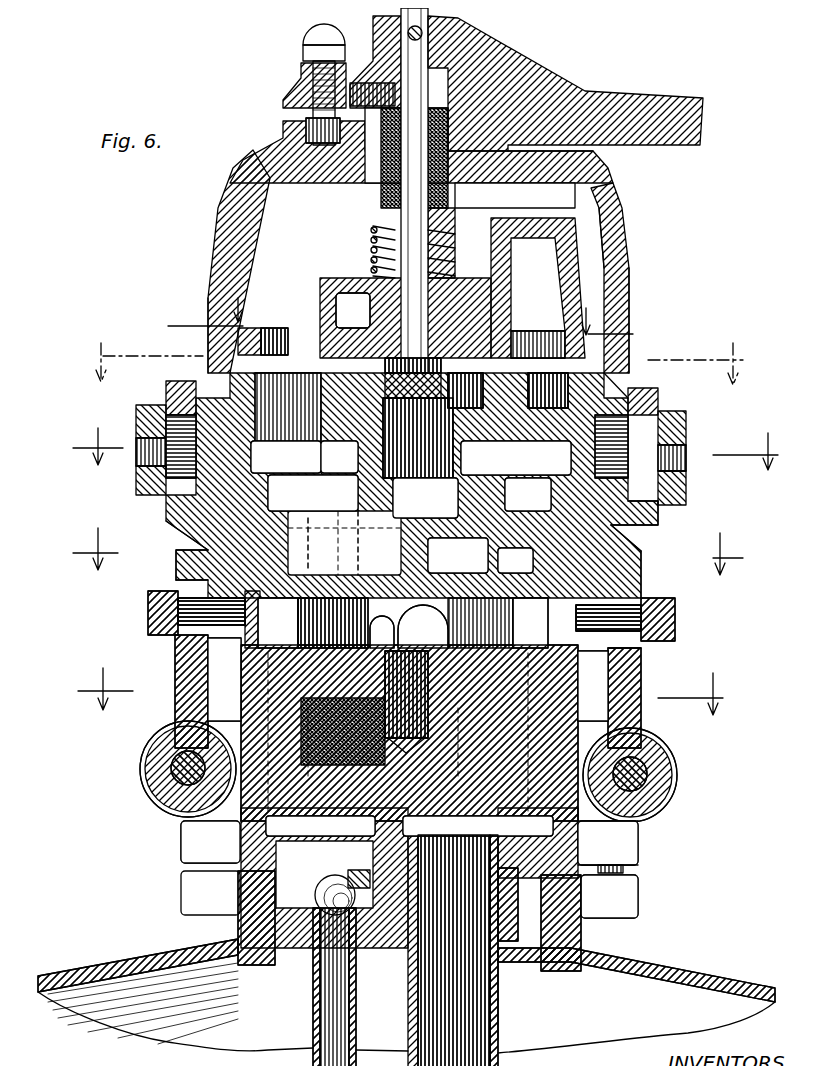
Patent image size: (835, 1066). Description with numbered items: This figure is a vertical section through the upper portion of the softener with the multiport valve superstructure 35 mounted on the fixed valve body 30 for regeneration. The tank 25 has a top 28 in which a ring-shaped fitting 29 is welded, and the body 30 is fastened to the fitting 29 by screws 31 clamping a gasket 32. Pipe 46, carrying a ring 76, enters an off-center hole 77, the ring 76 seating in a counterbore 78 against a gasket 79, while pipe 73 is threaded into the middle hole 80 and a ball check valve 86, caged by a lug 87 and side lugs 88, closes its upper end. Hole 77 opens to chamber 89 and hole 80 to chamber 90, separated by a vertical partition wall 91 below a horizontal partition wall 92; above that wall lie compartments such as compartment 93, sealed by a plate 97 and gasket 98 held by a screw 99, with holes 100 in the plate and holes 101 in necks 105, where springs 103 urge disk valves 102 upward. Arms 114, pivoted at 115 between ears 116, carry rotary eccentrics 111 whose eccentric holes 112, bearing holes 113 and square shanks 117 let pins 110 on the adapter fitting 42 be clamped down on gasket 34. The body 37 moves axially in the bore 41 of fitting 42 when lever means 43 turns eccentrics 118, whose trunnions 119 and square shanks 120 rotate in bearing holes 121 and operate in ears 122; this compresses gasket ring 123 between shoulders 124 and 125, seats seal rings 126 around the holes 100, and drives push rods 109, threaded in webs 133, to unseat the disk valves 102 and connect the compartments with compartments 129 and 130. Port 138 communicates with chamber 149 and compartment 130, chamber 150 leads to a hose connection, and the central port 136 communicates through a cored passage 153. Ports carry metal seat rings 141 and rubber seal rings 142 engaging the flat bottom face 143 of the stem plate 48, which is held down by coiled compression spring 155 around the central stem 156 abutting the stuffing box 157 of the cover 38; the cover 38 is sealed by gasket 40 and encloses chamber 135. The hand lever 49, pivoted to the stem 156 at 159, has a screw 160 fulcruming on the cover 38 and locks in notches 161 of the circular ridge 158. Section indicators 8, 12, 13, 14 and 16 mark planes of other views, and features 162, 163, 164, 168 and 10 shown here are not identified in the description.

The pivotal connection 159 is at (400, 25).
The screw 160 is at (293, 72).
The circular ridge 158 is at (290, 125).
The notches 161 is at (540, 143).
The hand lever 49 is at (690, 125).
The stuffing box 157 is at (450, 185).
The central stem 156 is at (365, 212).
The coiled compression spring 155 is at (445, 245).
The passage 168 is at (340, 290).
The chamber 135 is at (215, 242).
The stem plate 48 is at (575, 225).
The cover 38 is at (600, 245).
The control valve superstructure 35 is at (632, 285).
The section line 8 is at (412, 327).
The chamber 164 is at (548, 308).
The sleeve 163 is at (538, 344).
The bushing 162 is at (260, 328).
The section line 12 is at (427, 361).
The flat disk valves 102 is at (200, 368).
The ears 122 is at (160, 382).
The lever means 43 is at (130, 407).
The square operating shanks 120 is at (130, 445).
The section line 16 is at (432, 454).
The trunnions 119 is at (359, 463).
The flat bottom face 143 is at (378, 360).
The rubber seal rings 142 is at (469, 390).
The port 138 is at (549, 390).
The bearing holes 121 is at (510, 420).
The central port 136 is at (418, 438).
The gasket 40 is at (600, 372).
The eccentrics 118 is at (680, 482).
The chamber 150 is at (300, 459).
The metal seat ring 141 is at (341, 457).
The chamber 149 is at (545, 461).
The annular shoulder 125 is at (255, 525).
The cored passage 153 is at (438, 506).
The body 37 is at (640, 505).
The bore 41 is at (182, 526).
The section line 13 is at (413, 557).
The gasket ring 123 is at (633, 532).
The webs 133 is at (309, 543).
The push rods 109 is at (415, 560).
The compartment 129 is at (390, 560).
The compartment 130 is at (455, 558).
The adapter fitting 42 is at (168, 556).
The rotary eccentrics 111 is at (168, 580).
The annular shoulder 124 is at (222, 611).
The pin projections 110 is at (281, 621).
The screw 99 is at (340, 612).
The rubber seal rings 126 is at (414, 623).
The holes 100 is at (462, 679).
The eccentric holes 112 is at (634, 610).
The square shank portions 117 is at (667, 630).
The bearing holes 113 is at (633, 648).
The gasket 34 is at (625, 668).
The section line 14 is at (408, 696).
The arms 114 is at (168, 680).
The plate 97 is at (236, 660).
The compartment 93 is at (236, 688).
The gasket 98 is at (566, 675).
The pivot 115 is at (168, 760).
The ears 116 is at (665, 790).
The base 10 is at (212, 846).
The horizontal partition wall 92 is at (320, 826).
The chamber 90 is at (316, 826).
The lug 87 is at (349, 826).
The ball check valve 86 is at (322, 868).
The lugs 88 is at (357, 871).
The vertical partition wall 91 is at (478, 826).
The chamber 89 is at (472, 826).
The holes 101 is at (509, 827).
The off-center hole 77 is at (535, 826).
The coiled compression springs 103 is at (454, 950).
The necks 105 is at (608, 843).
The fixed valve body 30 is at (600, 832).
The screws 31 is at (610, 860).
The gasket 32 is at (609, 896).
The middle hole 80 is at (233, 918).
The gasket 79 is at (482, 895).
The ring-shaped fitting 29 is at (565, 928).
The counterbore 78 is at (508, 933).
The top 28 is at (662, 958).
The tank 25 is at (700, 968).
The ring 76 is at (497, 958).
The pipe 73 is at (305, 1016).
The pipe 46 is at (492, 1012).